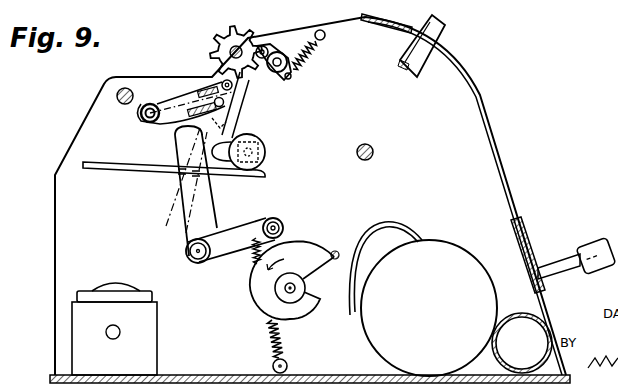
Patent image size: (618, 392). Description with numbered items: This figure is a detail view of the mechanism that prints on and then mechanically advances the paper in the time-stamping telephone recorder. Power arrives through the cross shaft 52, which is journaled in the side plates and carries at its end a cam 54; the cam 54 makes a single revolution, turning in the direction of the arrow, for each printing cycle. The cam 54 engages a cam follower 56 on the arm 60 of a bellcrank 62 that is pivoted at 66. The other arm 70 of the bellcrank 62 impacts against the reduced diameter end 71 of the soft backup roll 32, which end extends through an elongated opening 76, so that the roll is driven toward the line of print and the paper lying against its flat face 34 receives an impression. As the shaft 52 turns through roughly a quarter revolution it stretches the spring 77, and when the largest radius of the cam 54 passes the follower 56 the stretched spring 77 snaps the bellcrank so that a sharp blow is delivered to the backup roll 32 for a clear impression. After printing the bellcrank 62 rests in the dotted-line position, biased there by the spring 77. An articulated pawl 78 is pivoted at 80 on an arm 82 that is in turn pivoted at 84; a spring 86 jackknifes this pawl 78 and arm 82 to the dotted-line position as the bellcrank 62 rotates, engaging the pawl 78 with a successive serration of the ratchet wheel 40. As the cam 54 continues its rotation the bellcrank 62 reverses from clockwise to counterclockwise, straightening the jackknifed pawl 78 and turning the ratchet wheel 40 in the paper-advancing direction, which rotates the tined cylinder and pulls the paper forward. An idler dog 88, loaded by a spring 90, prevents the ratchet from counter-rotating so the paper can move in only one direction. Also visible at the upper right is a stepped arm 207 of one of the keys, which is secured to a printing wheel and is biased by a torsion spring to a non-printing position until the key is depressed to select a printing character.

The ratchet wheel 40 is at (217, 45).
The spring 86 is at (213, 82).
The arm 82 is at (162, 106).
The pivot 84 is at (140, 116).
The idler dog 88 is at (281, 51).
The spring 90 is at (323, 48).
The articulated pawl 78 is at (248, 77).
The pivot 80 is at (228, 107).
The soft backup roll 32 is at (265, 128).
The flat face 34 is at (270, 143).
The reduced diameter end 71 is at (268, 152).
The arm 207 is at (432, 38).
The elongated opening 76 is at (174, 145).
The arm 70 is at (173, 190).
The bellcrank 62 is at (265, 220).
The cam follower 56 is at (283, 222).
The cam 54 is at (303, 250).
The cross shaft 52 is at (296, 289).
The spring 77 is at (282, 338).
The pivot 66 is at (195, 264).
The arm 60 is at (232, 248).